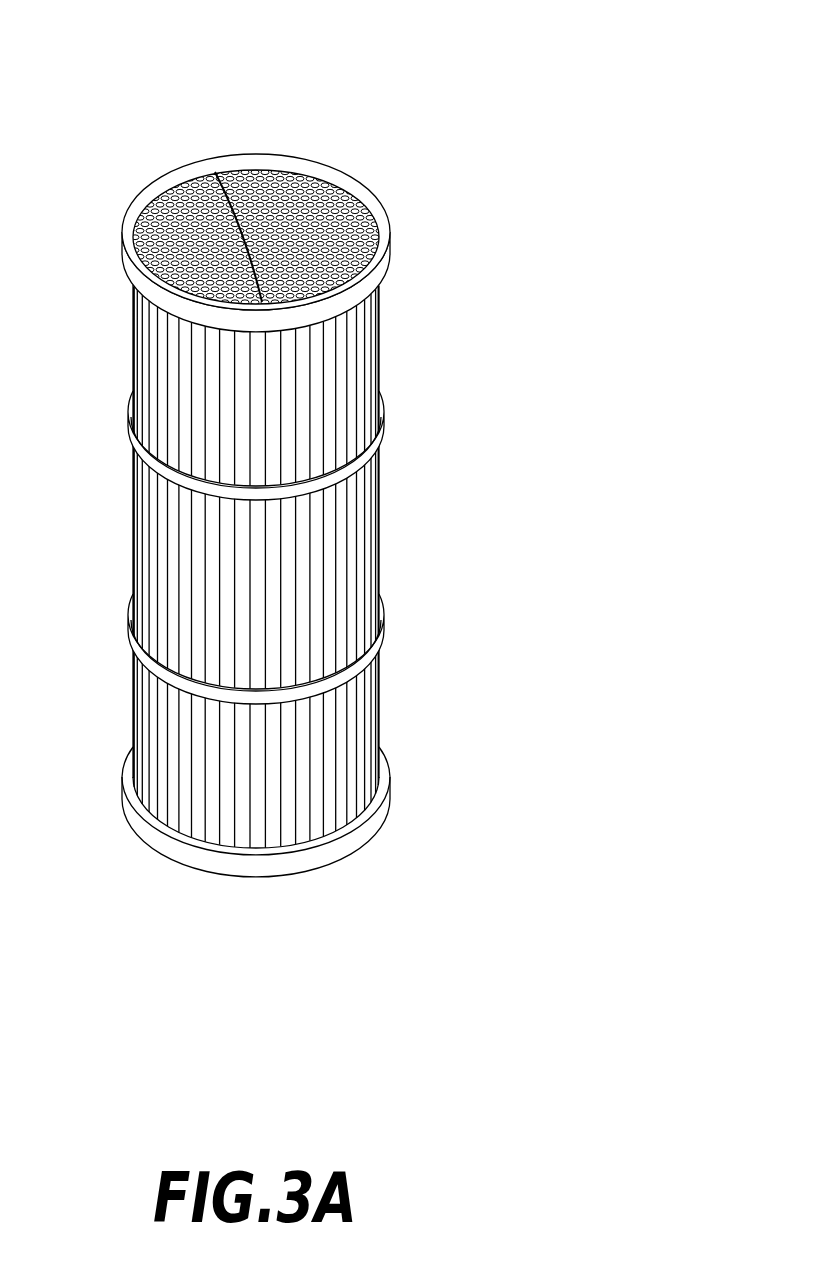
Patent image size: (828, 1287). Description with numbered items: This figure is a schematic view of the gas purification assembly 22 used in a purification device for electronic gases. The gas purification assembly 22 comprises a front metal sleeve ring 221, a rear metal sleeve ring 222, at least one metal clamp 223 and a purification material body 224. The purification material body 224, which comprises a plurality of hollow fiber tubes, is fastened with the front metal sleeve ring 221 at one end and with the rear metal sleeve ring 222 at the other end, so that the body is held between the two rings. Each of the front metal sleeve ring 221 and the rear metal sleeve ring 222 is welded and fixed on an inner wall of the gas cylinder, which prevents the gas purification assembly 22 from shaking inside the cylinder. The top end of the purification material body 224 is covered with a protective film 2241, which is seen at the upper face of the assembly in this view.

The gas purification assembly 22 is at (152, 133).
The front metal sleeve ring 221 is at (385, 263).
The rear metal sleeve ring 222 is at (133, 822).
The metal clamp 223 is at (383, 432).
The purification material body 224 is at (362, 568).
The protective film 2241 is at (330, 172).